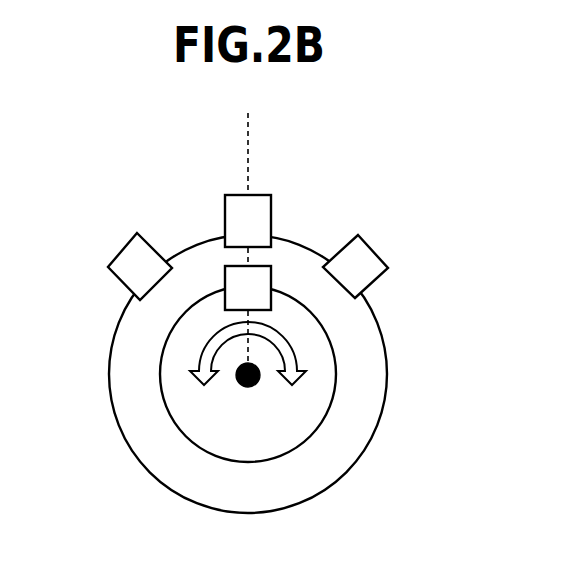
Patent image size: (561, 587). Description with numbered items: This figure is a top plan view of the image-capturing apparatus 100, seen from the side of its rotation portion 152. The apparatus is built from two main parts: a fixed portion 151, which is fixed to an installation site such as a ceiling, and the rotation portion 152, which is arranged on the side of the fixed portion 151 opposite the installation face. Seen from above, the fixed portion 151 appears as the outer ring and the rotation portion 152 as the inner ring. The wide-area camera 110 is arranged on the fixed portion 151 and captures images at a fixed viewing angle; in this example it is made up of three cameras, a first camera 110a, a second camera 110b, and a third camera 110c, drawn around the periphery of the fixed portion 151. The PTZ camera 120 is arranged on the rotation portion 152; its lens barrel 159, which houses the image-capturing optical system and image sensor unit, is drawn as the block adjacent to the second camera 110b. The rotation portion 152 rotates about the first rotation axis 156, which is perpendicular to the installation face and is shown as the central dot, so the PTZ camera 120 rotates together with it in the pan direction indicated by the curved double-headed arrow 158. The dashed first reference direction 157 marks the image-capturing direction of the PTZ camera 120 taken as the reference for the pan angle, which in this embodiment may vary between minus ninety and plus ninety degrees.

The image-capturing apparatus 100 is at (297, 327).
The wide-area camera 110 is at (276, 194).
The first camera 110a is at (128, 243).
The second camera 110b is at (263, 195).
The third camera 110c is at (380, 248).
The PTZ camera 120 is at (313, 253).
The lens barrel 159 is at (271, 273).
The fixed portion 151 is at (145, 472).
The rotation portion 152 is at (212, 455).
The first rotation axis 156 is at (248, 387).
The first reference direction 157 is at (246, 133).
The arrow 158 is at (295, 381).